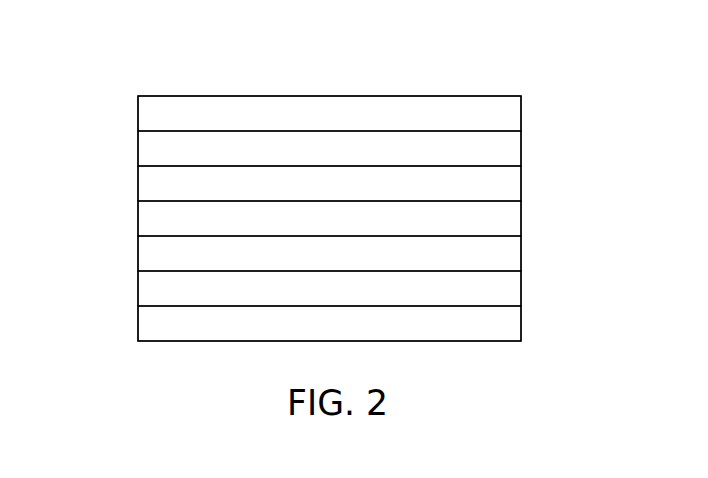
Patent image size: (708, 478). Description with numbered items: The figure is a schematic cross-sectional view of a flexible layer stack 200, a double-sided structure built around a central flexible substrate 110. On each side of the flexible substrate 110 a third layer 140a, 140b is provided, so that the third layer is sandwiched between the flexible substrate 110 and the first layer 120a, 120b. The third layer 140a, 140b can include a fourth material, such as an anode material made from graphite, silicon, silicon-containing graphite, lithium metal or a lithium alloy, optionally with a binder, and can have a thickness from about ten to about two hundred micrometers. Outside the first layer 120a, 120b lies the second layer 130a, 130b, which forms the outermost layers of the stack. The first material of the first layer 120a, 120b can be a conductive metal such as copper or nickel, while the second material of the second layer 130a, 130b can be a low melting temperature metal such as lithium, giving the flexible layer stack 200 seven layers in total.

The flexible layer stack 200 is at (133, 41).
The second layer 130a is at (522, 115).
The first layer 120a is at (137, 150).
The third layer 140a is at (522, 186).
The flexible substrate 110 is at (522, 219).
The third layer 140b is at (522, 254).
The first layer 120b is at (137, 289).
The second layer 130b is at (522, 322).